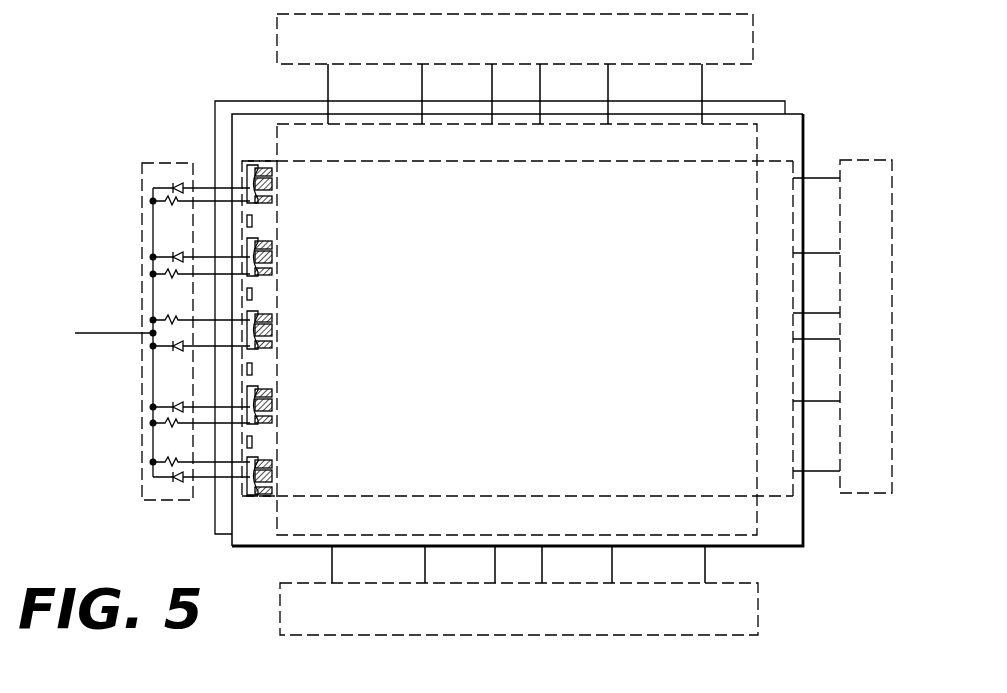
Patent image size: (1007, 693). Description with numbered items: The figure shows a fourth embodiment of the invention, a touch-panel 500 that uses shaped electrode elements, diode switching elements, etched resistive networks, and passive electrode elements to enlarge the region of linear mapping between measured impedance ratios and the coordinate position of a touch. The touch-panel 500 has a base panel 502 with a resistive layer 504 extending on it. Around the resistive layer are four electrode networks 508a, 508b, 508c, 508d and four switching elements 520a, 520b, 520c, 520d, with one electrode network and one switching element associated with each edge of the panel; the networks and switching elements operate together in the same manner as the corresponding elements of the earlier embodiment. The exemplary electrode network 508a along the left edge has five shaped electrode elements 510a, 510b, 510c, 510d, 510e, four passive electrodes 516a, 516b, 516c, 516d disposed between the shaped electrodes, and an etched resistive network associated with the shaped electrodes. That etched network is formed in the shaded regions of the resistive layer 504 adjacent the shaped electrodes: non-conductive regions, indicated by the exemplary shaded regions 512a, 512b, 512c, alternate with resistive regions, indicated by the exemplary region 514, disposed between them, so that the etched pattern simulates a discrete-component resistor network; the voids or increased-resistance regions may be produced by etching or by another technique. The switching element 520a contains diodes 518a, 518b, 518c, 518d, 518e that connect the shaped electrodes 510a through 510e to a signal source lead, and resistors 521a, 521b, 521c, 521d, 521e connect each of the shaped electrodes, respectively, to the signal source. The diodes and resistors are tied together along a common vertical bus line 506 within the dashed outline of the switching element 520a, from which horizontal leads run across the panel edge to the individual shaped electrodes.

The touch-panel 500 is at (152, 100).
The base panel 502 is at (262, 101).
The resistive layer 504 is at (397, 115).
The common bus line 506 is at (153, 375).
The electrode network 508a is at (278, 229).
The electrode network 508b is at (593, 163).
The electrode network 508c is at (765, 383).
The electrode network 508d is at (457, 497).
The shaped electrode element 510a is at (250, 165).
The shaped electrode element 510b is at (255, 240).
The shaped electrode element 510c is at (258, 312).
The shaped electrode element 510d is at (258, 388).
The shaped electrode element 510e is at (258, 462).
The non-conductive region 512a is at (270, 172).
The non-conductive region 512b is at (274, 186).
The non-conductive region 512c is at (272, 200).
The resistive region 514 is at (274, 258).
The passive electrode 516a is at (254, 221).
The passive electrode 516b is at (254, 296).
The passive electrode 516c is at (254, 366).
The passive electrode 516d is at (254, 440).
The diode 518a is at (170, 186).
The diode 518b is at (170, 255).
The diode 518c is at (170, 348).
The diode 518d is at (170, 408).
The diode 518e is at (178, 486).
The switching element 520a is at (142, 217).
The switching element 520b is at (755, 36).
The switching element 520c is at (878, 493).
The switching element 520d is at (715, 583).
The resistor 521a is at (165, 203).
The resistor 521b is at (165, 276).
The resistor 521c is at (170, 320).
The resistor 521d is at (165, 424).
The resistor 521e is at (165, 462).